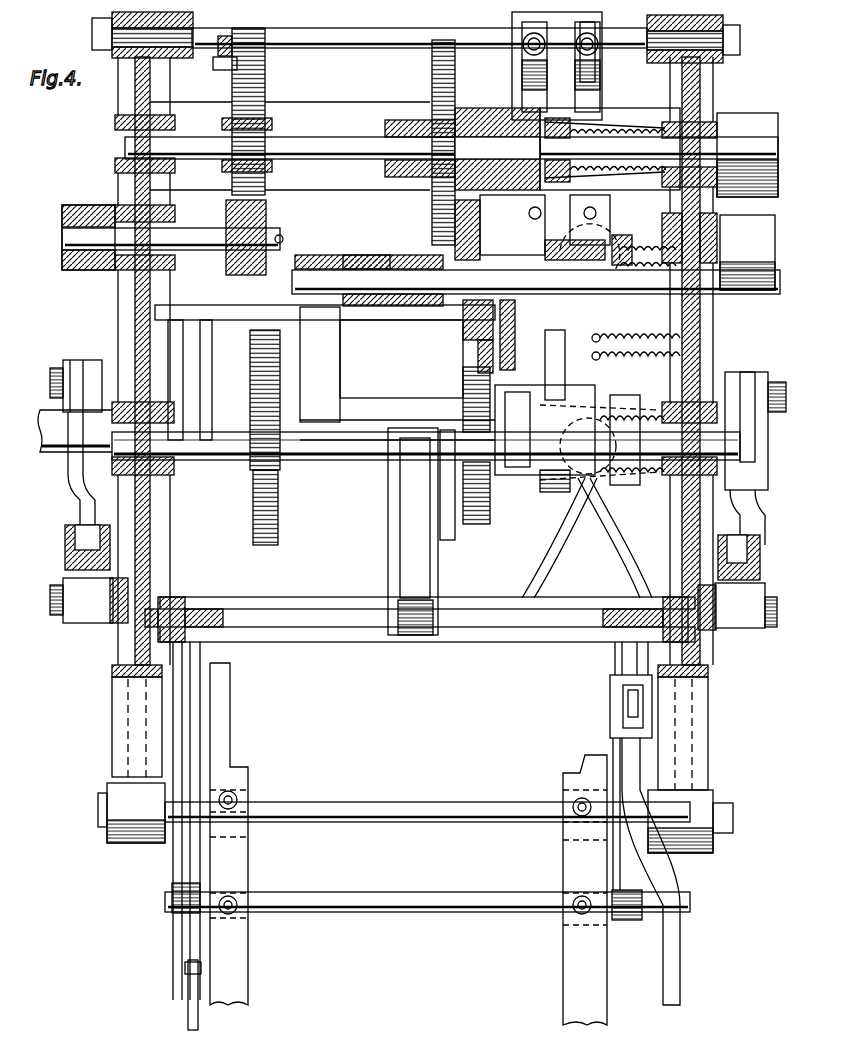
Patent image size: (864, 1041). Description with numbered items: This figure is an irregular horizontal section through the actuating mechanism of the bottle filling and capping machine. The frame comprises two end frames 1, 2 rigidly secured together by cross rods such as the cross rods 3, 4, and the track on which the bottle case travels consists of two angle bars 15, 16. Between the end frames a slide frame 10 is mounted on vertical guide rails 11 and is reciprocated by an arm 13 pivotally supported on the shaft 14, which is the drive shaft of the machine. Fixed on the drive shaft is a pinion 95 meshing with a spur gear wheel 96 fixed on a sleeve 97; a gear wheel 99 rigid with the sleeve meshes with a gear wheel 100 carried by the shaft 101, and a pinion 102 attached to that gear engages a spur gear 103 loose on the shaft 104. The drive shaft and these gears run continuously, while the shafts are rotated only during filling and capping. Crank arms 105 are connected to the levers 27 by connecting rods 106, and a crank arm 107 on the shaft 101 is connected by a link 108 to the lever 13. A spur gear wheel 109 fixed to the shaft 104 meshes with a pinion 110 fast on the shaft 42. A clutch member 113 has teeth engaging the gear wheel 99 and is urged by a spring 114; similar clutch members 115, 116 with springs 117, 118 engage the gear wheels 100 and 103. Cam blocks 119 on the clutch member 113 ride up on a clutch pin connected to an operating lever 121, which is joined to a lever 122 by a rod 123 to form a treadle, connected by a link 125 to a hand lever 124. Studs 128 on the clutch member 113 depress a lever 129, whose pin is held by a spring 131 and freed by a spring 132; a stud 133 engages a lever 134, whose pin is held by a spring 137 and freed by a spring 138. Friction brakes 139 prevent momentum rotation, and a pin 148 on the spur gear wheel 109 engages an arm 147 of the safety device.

The end frame 1 is at (700, 757).
The end frame 2 is at (112, 738).
The cross rod 3 is at (402, 822).
The cross rod 4 is at (374, 40).
The slide frame 10 is at (484, 640).
The vertical guide rail 11 is at (180, 600).
The arm 13 is at (388, 553).
The shaft 14 is at (55, 445).
The angle bar 15 is at (564, 962).
The angle bar 16 is at (240, 975).
The lever 27 is at (65, 553).
The shaft 42 is at (198, 232).
The pinion 95 is at (270, 462).
The spur gear wheel 96 is at (282, 507).
The sleeve 97 is at (446, 482).
The gear wheel 99 is at (480, 526).
The gear wheel 100 is at (478, 350).
The shaft 101 is at (383, 268).
The pinion 102 is at (465, 325).
The spur gear 103 is at (430, 78).
The shaft 104 is at (328, 140).
The crank arm 105 is at (92, 372).
The connecting rod 106 is at (68, 490).
The crank arm 107 is at (348, 256).
The link 108 is at (310, 256).
The spur gear wheel 109 is at (253, 35).
The pinion 110 is at (246, 276).
The clutch member 113 is at (587, 538).
The spring 114 is at (625, 415).
The clutch member 115 is at (600, 245).
The clutch member 116 is at (488, 110).
The spring 117 is at (622, 255).
The spring 118 is at (632, 130).
The cam block 119 is at (605, 400).
The operating lever 121 is at (610, 672).
The lever 122 is at (186, 718).
The rod 123 is at (420, 910).
The hand lever 124 is at (672, 950).
The link 125 is at (623, 706).
The stud 128 is at (461, 386).
The lever 129 is at (594, 72).
The spring 131 is at (582, 241).
The spring 132 is at (700, 358).
The stud 133 is at (545, 360).
The lever 134 is at (512, 45).
The spring 137 is at (500, 227).
The spring 138 is at (700, 338).
The friction brake 139 is at (749, 118).
The arm 147 is at (224, 35).
The pin 148 is at (224, 70).